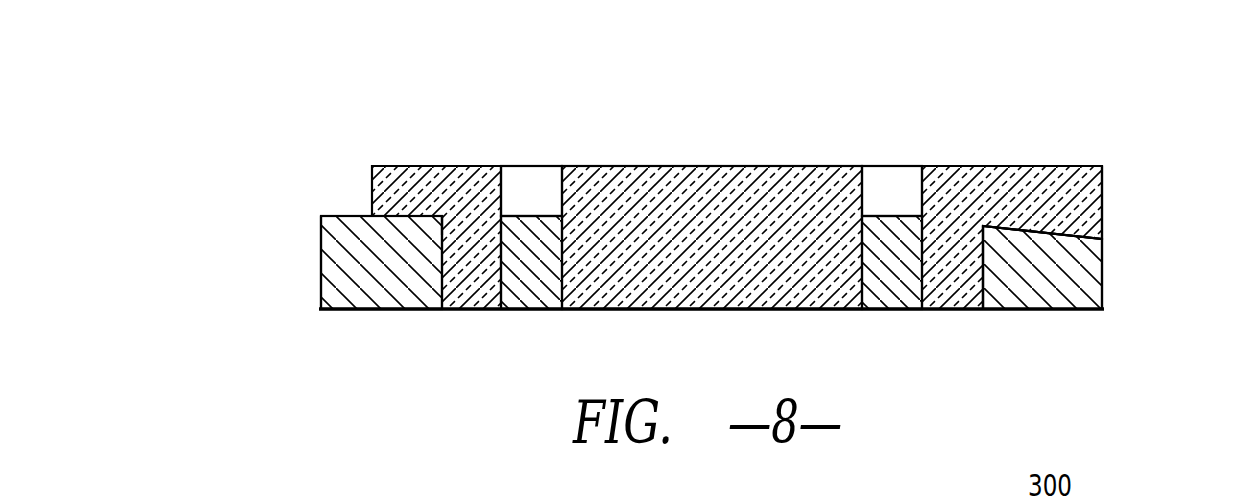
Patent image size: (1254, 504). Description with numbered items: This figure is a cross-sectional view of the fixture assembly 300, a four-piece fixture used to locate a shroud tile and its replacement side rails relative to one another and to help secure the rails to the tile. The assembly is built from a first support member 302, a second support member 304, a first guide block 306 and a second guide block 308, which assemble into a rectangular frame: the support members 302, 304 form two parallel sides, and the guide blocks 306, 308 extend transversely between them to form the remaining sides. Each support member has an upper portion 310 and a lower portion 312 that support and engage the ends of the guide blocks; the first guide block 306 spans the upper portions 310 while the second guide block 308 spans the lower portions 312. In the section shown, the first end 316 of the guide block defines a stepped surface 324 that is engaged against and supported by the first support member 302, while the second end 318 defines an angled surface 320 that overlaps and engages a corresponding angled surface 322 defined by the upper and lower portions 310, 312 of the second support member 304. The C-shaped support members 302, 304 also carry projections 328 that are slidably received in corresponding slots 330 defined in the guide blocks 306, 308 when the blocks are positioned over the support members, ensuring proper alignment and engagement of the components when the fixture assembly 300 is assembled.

The fixture assembly 300 is at (717, 198).
The first support member 302 is at (321, 283).
The second support member 304 is at (1102, 282).
The first guide block 306 is at (712, 207).
The second guide block 308 is at (683, 167).
The upper portion 310 is at (717, 237).
The lower portion 312 is at (337, 250).
The first end 316 is at (372, 186).
The second end 318 is at (1103, 193).
The angled surface 320 is at (1027, 233).
The angled surface 322 is at (1060, 232).
The stepped surface 324 is at (408, 216).
The projection 328 is at (530, 292).
The slot 330 is at (525, 178).